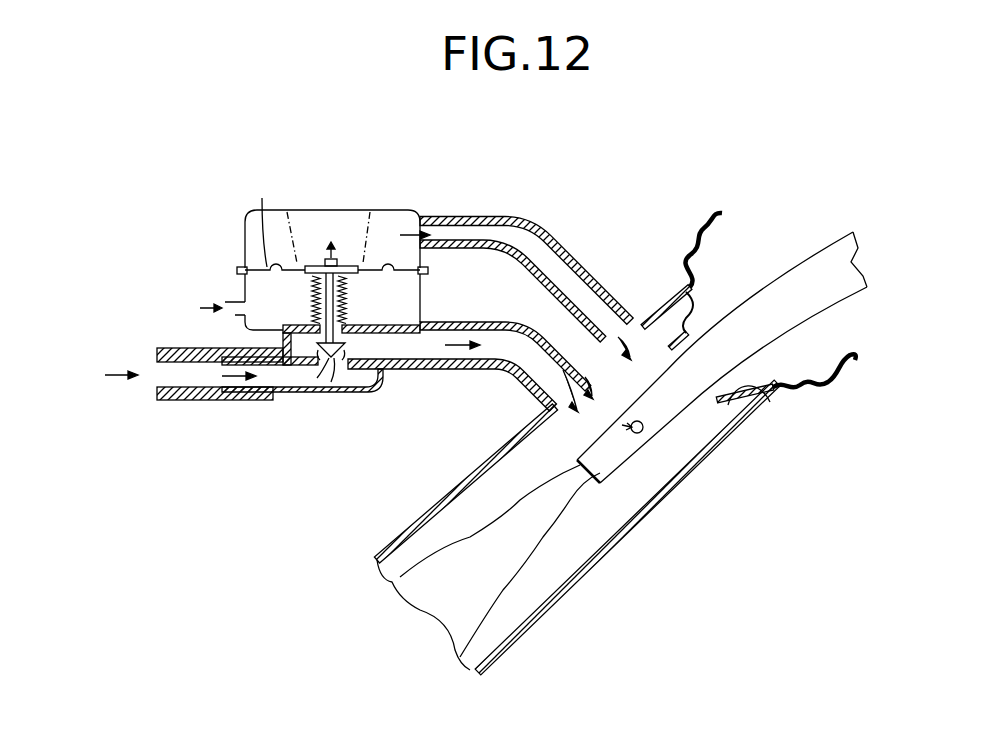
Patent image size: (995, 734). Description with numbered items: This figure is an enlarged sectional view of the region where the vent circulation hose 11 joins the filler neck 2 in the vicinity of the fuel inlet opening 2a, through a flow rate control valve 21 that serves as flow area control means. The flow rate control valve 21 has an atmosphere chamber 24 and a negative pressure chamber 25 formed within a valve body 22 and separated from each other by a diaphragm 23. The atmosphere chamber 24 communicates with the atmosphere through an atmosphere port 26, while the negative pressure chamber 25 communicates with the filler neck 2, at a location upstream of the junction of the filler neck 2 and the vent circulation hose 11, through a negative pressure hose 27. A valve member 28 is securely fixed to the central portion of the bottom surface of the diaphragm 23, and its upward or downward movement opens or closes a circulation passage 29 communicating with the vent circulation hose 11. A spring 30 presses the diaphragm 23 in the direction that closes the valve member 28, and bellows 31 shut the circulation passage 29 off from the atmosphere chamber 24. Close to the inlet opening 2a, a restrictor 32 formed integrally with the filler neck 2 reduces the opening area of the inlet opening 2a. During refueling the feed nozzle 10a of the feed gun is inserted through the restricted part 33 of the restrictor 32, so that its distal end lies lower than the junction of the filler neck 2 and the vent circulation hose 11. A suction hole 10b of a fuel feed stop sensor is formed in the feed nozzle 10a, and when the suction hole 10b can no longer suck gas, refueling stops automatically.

The filler neck 2 is at (418, 510).
The fuel inlet opening 2a is at (747, 242).
The feed nozzle 10a is at (678, 413).
The suction hole 10b is at (641, 432).
The vent circulation hose 11 is at (187, 403).
The flow rate control valve 21 is at (318, 275).
The valve body 22 is at (245, 228).
The diaphragm 23 is at (264, 216).
The atmosphere chamber 24 is at (258, 290).
The negative pressure chamber 25 is at (389, 212).
The atmosphere port 26 is at (237, 316).
The negative pressure hose 27 is at (519, 215).
The valve member 28 is at (323, 378).
The circulation passage 29 is at (360, 382).
The spring 30 is at (303, 227).
The bellows 31 is at (353, 297).
The restrictor 32 is at (670, 323).
The restricted part 33 is at (757, 413).